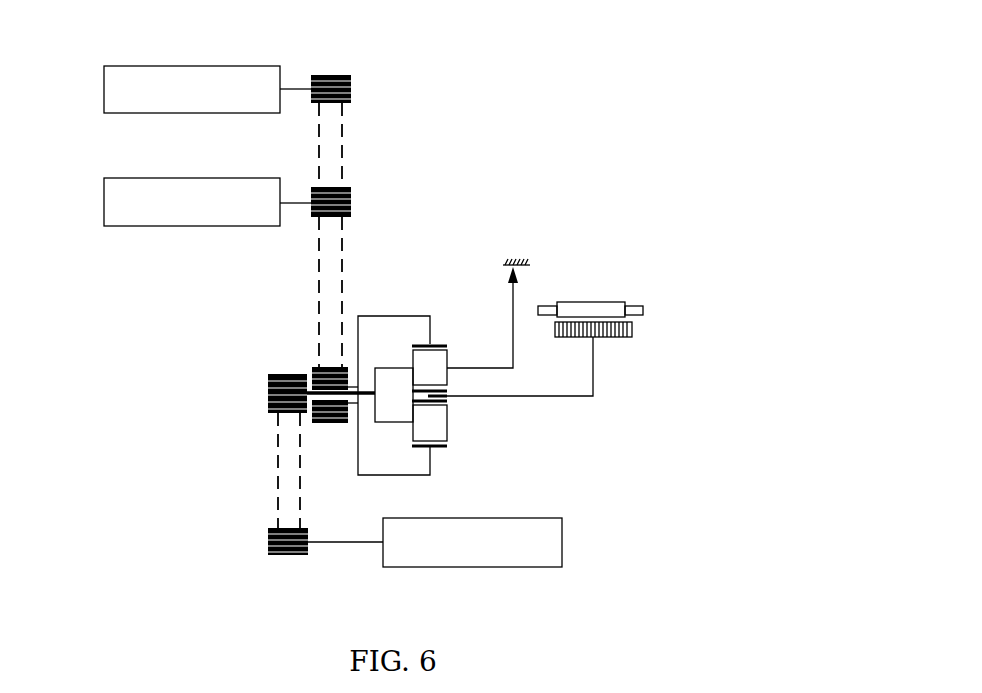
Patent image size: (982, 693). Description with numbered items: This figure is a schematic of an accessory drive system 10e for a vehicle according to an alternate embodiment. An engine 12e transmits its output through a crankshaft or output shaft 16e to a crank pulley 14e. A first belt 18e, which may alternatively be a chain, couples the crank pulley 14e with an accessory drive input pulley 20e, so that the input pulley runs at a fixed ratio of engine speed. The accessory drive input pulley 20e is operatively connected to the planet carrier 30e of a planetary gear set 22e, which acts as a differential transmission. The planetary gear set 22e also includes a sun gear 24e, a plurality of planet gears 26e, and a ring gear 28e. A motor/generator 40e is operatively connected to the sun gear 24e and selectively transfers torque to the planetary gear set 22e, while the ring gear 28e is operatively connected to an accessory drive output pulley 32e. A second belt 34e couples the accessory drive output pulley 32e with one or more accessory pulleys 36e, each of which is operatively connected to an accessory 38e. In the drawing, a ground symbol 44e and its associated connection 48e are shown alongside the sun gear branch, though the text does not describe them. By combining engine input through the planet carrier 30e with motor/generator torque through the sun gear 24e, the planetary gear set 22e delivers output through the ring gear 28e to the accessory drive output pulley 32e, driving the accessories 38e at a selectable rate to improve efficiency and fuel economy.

The accessory drive system 10e is at (592, 124).
The engine 12e is at (525, 567).
The crank pulley 14e is at (280, 556).
The output shaft 16e is at (365, 543).
The first belt 18e is at (272, 487).
The accessory drive input pulley 20e is at (268, 384).
The planetary gear set 22e is at (488, 448).
The sun gear 24e is at (454, 385).
The planet gears 26e is at (438, 358).
The ring gear 28e is at (434, 345).
The planet carrier 30e is at (397, 423).
The accessory drive output pulley 32e is at (332, 423).
The second belt 34e is at (346, 272).
The accessory pulleys 36e is at (337, 75).
The accessories 38e is at (111, 66).
The motor/generator 40e is at (613, 294).
The ground 44e is at (517, 276).
The brake connection 48e is at (517, 245).